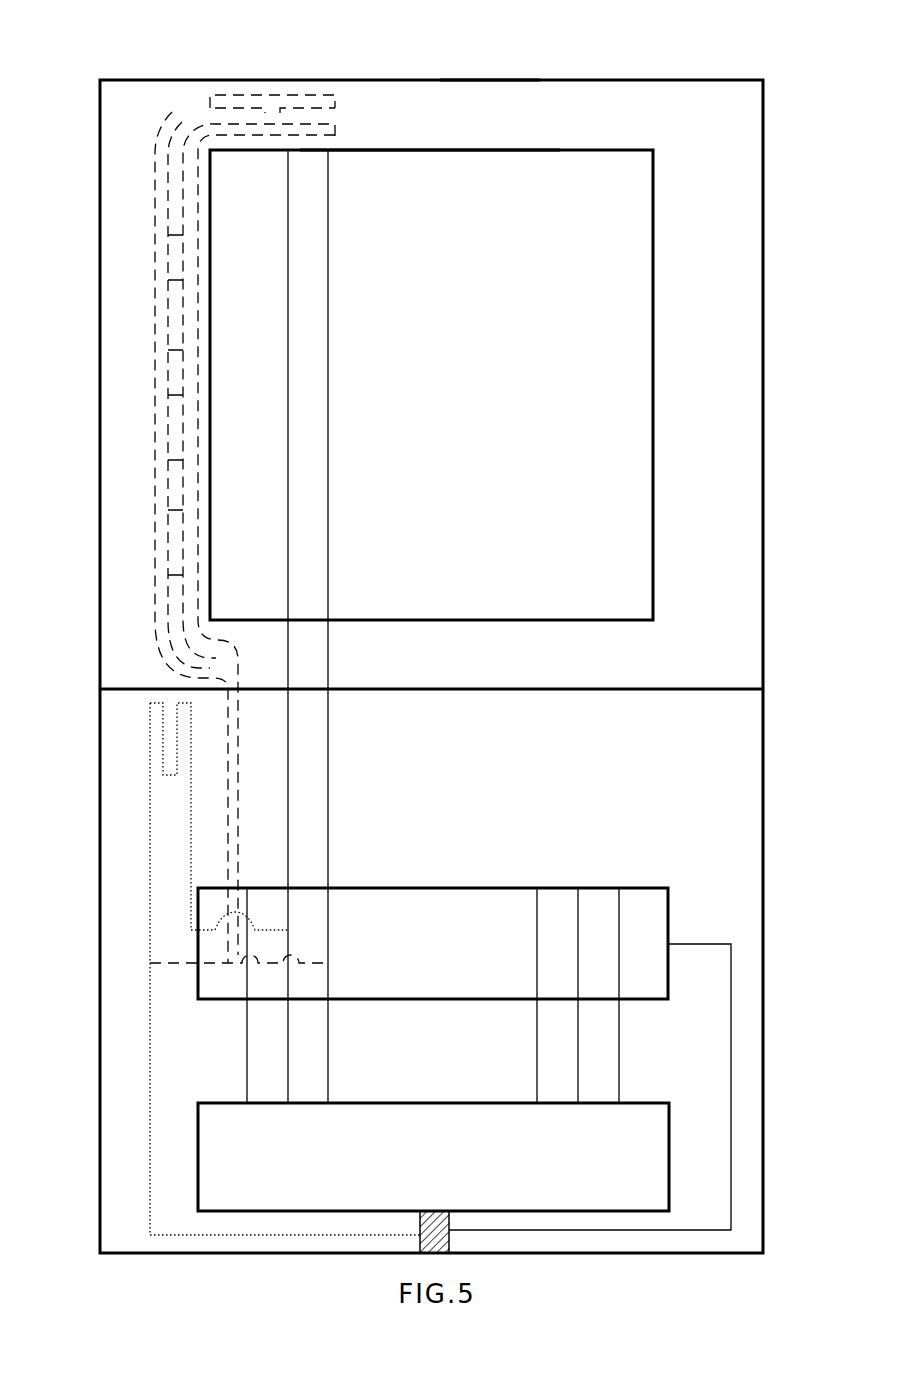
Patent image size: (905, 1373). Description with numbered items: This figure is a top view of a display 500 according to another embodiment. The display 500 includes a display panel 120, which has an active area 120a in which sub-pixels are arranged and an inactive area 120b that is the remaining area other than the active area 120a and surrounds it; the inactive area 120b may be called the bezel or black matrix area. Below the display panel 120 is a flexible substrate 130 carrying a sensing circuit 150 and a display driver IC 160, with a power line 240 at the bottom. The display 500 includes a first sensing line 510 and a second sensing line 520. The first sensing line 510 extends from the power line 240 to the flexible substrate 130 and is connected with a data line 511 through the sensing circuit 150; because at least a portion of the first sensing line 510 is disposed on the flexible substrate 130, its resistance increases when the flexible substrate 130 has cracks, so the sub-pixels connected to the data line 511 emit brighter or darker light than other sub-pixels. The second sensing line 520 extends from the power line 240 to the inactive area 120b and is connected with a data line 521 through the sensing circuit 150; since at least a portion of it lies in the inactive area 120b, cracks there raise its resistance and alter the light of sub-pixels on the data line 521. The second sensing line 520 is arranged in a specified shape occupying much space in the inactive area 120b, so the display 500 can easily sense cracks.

The display 500 is at (158, 26).
The display panel 120 is at (432, 36).
The active area 120a is at (429, 150).
The inactive area 120b is at (485, 80).
The flexible substrate 130 is at (750, 737).
The second sensing line 520 is at (272, 95).
The data line 511 is at (288, 388).
The data line 521 is at (328, 388).
The first sensing line 510 is at (150, 1172).
The sensing circuit 150 is at (668, 910).
The display driver IC 160 is at (669, 1156).
The power line 240 is at (449, 1222).